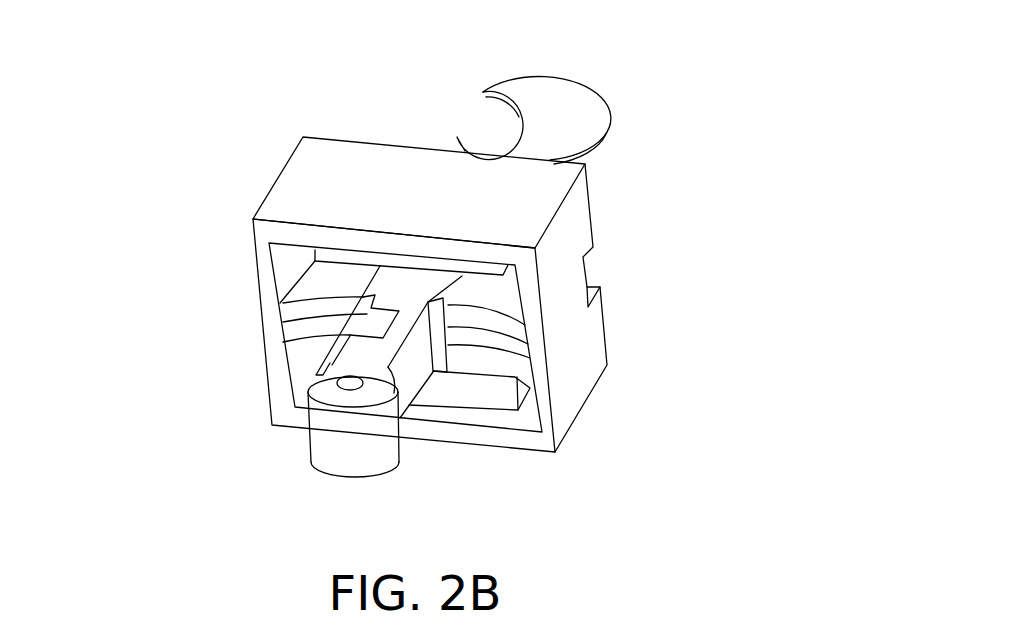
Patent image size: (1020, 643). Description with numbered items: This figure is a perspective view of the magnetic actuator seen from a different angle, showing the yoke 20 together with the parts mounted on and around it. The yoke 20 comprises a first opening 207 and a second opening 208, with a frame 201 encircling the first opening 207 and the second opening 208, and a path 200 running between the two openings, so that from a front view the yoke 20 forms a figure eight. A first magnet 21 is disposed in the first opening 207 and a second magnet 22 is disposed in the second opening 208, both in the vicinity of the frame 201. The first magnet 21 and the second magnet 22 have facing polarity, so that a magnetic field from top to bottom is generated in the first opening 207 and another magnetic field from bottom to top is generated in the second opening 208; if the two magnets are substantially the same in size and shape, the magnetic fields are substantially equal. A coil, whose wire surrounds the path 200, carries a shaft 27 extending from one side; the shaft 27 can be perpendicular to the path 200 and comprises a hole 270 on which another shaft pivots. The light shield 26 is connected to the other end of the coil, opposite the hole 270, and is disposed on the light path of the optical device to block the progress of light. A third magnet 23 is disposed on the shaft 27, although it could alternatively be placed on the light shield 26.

The yoke 20 is at (283, 163).
The frame 201 is at (528, 195).
The light shield 26 is at (568, 113).
The first magnet 21 is at (330, 255).
The third magnet 23 is at (378, 328).
The first opening 207 is at (492, 293).
The path 200 is at (467, 322).
The second opening 208 is at (487, 358).
The second magnet 22 is at (475, 390).
The shaft 27 is at (365, 447).
The hole 270 is at (347, 382).